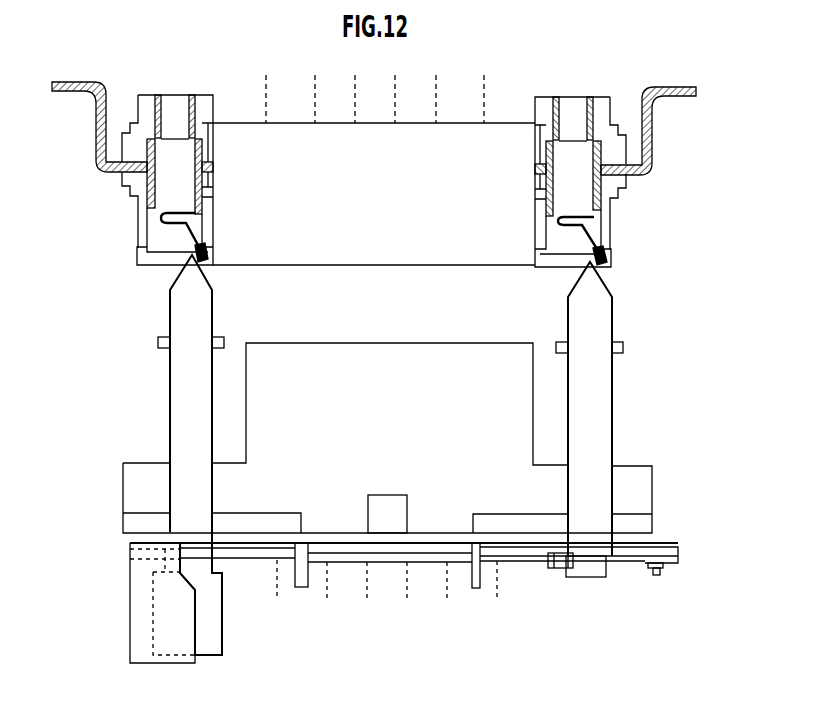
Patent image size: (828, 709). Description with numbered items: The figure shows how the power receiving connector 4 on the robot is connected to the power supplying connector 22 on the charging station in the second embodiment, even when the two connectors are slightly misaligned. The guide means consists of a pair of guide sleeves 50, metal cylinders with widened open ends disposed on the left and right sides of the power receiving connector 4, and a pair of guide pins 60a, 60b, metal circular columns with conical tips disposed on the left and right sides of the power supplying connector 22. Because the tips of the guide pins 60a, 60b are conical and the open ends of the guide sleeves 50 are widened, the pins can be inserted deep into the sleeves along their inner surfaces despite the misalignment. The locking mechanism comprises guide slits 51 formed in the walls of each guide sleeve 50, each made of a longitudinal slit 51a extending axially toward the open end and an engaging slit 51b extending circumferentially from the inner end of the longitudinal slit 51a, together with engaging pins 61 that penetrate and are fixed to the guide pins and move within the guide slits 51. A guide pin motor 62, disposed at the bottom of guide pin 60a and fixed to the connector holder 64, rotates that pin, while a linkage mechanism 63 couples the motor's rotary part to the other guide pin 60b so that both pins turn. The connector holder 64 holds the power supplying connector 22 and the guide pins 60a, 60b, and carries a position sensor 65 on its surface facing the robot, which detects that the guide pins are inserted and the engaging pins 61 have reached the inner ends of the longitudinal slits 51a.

The power receiving connector 4 is at (511, 123).
The power supplying connector 22 is at (336, 343).
The guide sleeve 50 is at (147, 207).
The guide slit 51 is at (429, 245).
The longitudinal slit 51a is at (596, 232).
The engaging slit 51b is at (607, 261).
The guide pin 60a is at (175, 396).
The guide pin 60b is at (606, 402).
The engaging pin 61 is at (158, 342).
The guide pin motor 62 is at (217, 615).
The linkage mechanism 63 is at (625, 564).
The connector holder 64 is at (645, 542).
The position sensor 65 is at (401, 516).